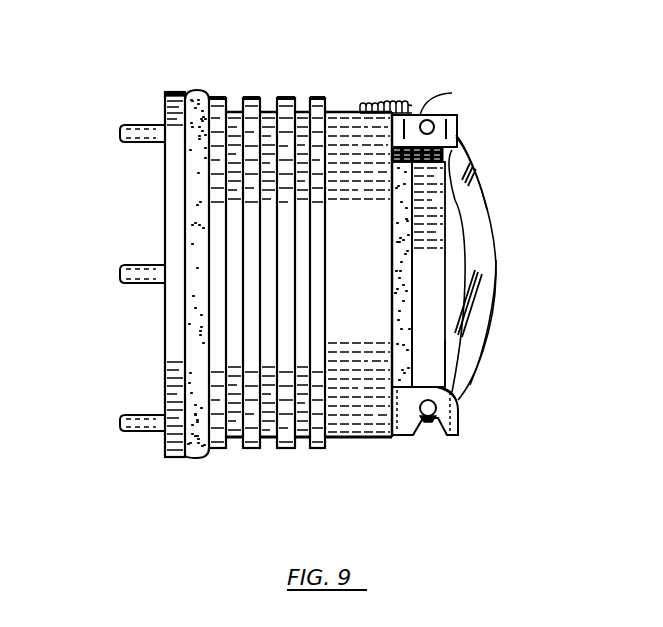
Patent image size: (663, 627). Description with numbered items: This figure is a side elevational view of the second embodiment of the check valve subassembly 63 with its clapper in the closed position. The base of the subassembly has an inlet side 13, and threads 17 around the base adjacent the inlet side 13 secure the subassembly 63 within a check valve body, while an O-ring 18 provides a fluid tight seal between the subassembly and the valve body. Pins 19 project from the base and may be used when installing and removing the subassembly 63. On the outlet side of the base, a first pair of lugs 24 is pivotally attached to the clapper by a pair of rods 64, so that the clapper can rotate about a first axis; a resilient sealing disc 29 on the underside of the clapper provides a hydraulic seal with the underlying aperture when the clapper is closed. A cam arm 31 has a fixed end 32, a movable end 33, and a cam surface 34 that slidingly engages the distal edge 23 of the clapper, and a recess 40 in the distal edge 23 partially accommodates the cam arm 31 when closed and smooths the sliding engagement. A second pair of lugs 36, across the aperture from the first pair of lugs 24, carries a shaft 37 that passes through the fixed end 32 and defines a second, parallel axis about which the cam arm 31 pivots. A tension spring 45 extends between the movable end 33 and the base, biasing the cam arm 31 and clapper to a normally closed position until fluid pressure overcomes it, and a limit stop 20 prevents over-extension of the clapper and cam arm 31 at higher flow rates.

The inlet side 13 is at (172, 218).
The threads 17 is at (289, 98).
The O-ring 18 is at (205, 90).
The pins 19 is at (137, 122).
The limit stop 20 is at (458, 202).
The distal edge 23 is at (445, 360).
The first pair of lugs 24 is at (455, 146).
The resilient sealing disc 29 is at (405, 272).
The cam arm 31 is at (500, 270).
The fixed end 32 is at (460, 410).
The movable end 33 is at (468, 156).
The cam surface 34 is at (472, 300).
The second pair of lugs 36 is at (407, 420).
The shaft 37 is at (420, 425).
The recess 40 is at (440, 387).
The tension spring 45 is at (375, 102).
The check valve subassembly 63 is at (264, 77).
The rods 64 is at (430, 124).